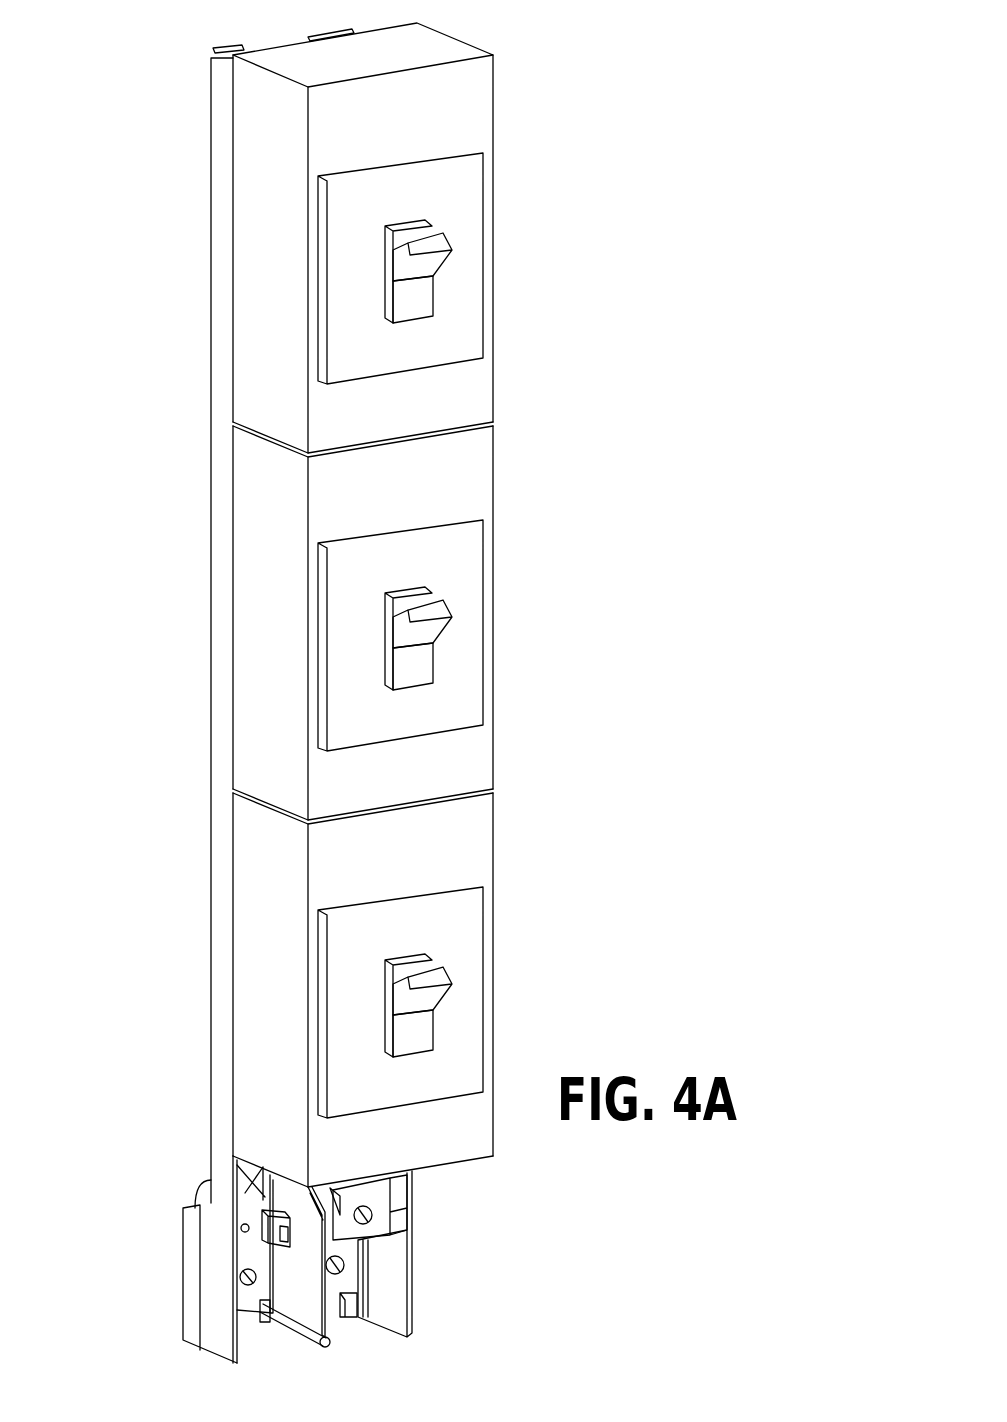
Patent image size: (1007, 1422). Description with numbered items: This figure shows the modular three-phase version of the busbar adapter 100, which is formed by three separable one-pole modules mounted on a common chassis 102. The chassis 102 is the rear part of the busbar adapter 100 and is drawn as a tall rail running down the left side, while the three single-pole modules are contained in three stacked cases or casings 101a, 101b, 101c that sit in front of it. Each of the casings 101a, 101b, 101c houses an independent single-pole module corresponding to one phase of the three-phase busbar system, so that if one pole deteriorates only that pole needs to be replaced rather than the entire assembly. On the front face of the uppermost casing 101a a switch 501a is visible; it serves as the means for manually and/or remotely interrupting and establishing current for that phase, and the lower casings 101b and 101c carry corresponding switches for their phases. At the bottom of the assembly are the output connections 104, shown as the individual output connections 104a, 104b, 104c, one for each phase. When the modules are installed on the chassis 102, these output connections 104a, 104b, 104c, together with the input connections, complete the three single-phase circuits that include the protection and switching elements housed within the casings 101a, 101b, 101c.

The busbar adapter 100 is at (508, 35).
The casing 101a is at (452, 256).
The casing 101b is at (468, 480).
The casing 101c is at (458, 851).
The chassis 102 is at (220, 265).
The switch 501a is at (437, 248).
The output connections 104 is at (400, 1285).
The output connection 104a is at (257, 1295).
The output connection 104b is at (345, 1282).
The output connection 104c is at (377, 1197).